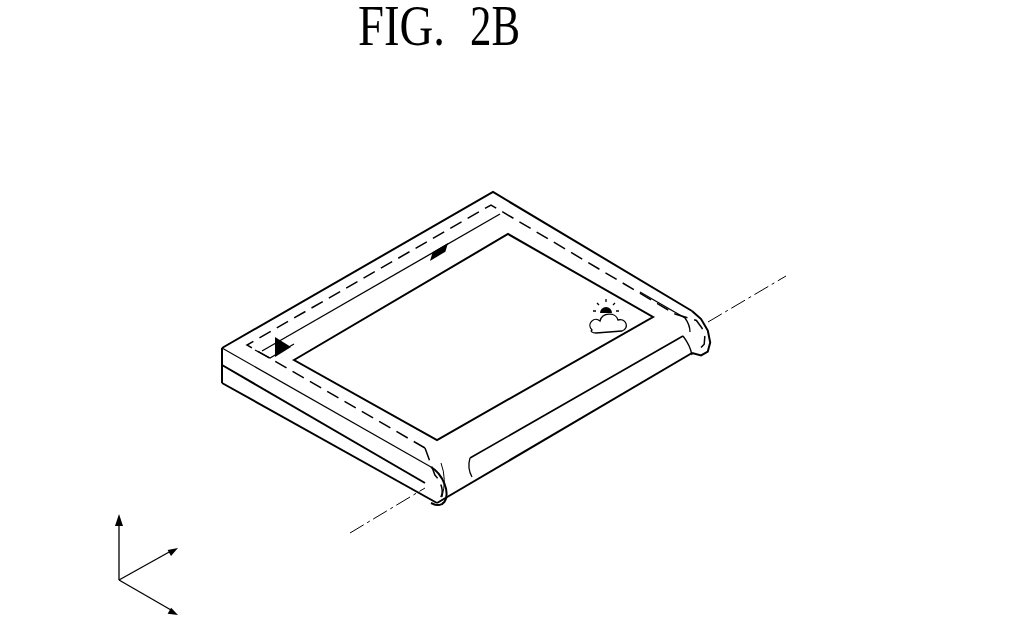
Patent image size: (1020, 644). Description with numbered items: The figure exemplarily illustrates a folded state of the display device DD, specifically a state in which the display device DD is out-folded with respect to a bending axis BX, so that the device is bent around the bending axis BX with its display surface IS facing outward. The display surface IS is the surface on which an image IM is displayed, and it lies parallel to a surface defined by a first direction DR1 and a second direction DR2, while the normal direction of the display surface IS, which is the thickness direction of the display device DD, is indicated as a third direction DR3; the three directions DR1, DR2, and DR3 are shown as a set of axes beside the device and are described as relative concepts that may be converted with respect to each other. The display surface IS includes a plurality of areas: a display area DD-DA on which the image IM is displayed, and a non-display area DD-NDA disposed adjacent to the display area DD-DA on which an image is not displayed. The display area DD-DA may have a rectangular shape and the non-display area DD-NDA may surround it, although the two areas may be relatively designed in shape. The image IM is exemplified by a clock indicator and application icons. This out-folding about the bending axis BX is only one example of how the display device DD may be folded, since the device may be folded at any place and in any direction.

The display device DD is at (708, 171).
The display surface IS is at (338, 173).
The display area DD-DA is at (402, 276).
The non-display area DD-NDA is at (320, 300).
The image IM is at (583, 273).
The bending axis BX is at (554, 412).
The first direction DR1 is at (170, 609).
The second direction DR2 is at (168, 552).
The third direction DR3 is at (118, 534).